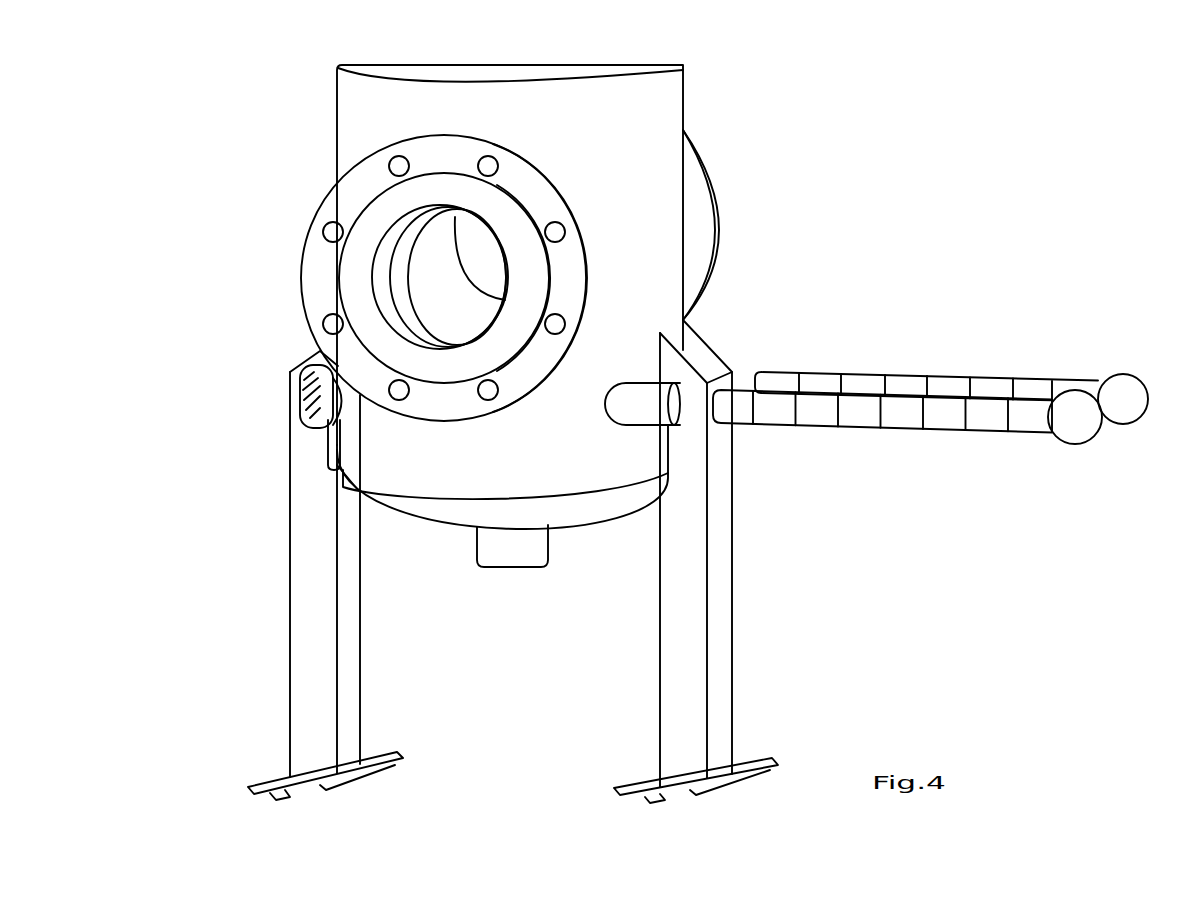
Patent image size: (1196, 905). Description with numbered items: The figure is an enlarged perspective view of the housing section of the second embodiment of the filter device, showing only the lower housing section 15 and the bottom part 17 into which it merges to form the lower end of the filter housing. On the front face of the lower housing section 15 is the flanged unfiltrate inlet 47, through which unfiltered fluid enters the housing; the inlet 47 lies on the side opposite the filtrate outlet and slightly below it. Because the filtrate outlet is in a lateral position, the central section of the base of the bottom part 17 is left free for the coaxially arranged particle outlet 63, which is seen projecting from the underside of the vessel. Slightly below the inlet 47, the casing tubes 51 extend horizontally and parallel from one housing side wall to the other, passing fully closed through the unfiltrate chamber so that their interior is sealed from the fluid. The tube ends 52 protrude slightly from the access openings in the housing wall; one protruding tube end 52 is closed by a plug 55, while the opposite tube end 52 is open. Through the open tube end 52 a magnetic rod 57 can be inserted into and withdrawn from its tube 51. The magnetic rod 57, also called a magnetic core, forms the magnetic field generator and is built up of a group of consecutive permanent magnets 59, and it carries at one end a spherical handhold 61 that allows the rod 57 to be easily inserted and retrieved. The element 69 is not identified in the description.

The lower housing section 15 is at (653, 257).
The unfiltrate inlet 47 is at (383, 257).
The plug 55 is at (290, 372).
The tube ends 52 is at (332, 440).
The bottom part 17 is at (340, 480).
The particle outlet 63 is at (485, 548).
The casing tubes 51 is at (627, 405).
The magnetic rod 57 is at (957, 375).
The permanent magnets 59 is at (828, 373).
The spherical handhold 61 is at (1122, 388).
The ball 69 is at (1083, 418).